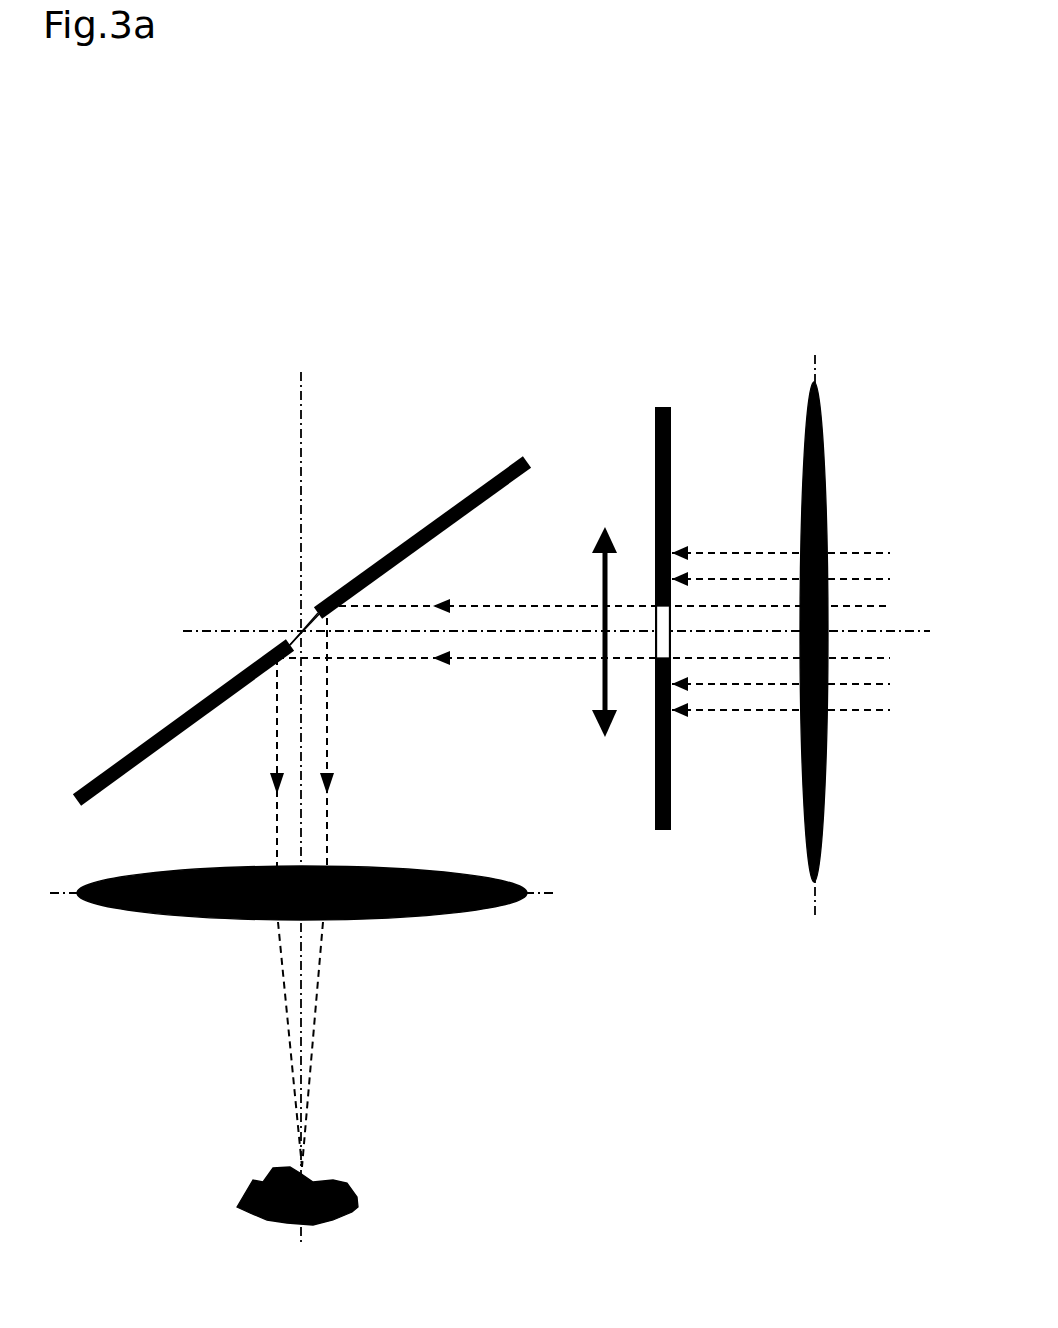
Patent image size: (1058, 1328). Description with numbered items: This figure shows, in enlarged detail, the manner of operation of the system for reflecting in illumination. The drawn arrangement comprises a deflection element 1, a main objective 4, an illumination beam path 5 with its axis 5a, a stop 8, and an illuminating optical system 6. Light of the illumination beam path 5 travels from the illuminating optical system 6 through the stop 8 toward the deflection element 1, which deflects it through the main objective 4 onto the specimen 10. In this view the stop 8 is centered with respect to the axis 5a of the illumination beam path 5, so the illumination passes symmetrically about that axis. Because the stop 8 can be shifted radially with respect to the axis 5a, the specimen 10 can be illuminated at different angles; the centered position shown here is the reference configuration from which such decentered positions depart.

The deflection element 1 is at (175, 717).
The main objective 4 is at (380, 920).
The illumination beam path 5 is at (497, 618).
The axis of illumination beam path 5a is at (238, 631).
The illuminating optical system 6 is at (813, 790).
The stop 8 is at (672, 445).
The specimen 10 is at (352, 1185).